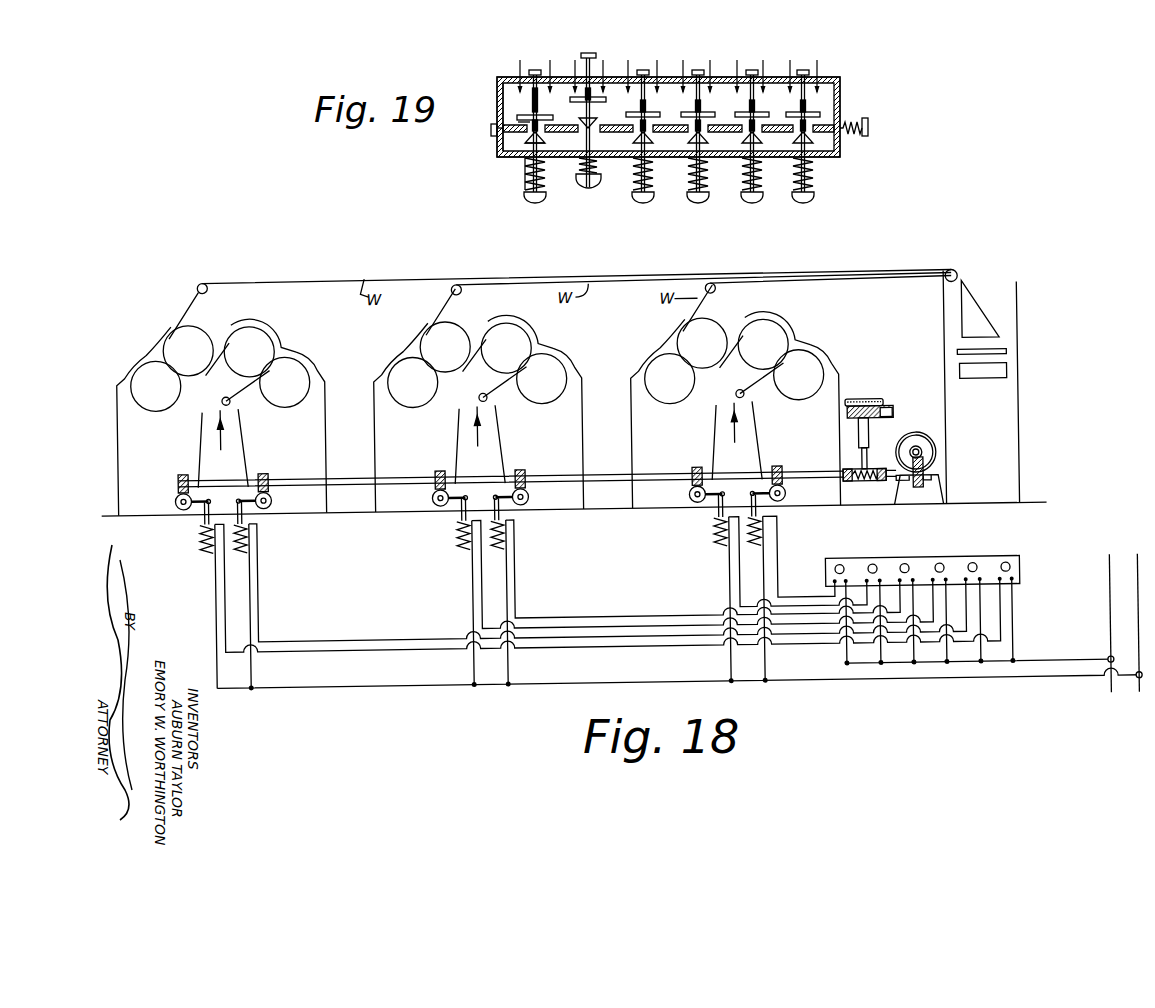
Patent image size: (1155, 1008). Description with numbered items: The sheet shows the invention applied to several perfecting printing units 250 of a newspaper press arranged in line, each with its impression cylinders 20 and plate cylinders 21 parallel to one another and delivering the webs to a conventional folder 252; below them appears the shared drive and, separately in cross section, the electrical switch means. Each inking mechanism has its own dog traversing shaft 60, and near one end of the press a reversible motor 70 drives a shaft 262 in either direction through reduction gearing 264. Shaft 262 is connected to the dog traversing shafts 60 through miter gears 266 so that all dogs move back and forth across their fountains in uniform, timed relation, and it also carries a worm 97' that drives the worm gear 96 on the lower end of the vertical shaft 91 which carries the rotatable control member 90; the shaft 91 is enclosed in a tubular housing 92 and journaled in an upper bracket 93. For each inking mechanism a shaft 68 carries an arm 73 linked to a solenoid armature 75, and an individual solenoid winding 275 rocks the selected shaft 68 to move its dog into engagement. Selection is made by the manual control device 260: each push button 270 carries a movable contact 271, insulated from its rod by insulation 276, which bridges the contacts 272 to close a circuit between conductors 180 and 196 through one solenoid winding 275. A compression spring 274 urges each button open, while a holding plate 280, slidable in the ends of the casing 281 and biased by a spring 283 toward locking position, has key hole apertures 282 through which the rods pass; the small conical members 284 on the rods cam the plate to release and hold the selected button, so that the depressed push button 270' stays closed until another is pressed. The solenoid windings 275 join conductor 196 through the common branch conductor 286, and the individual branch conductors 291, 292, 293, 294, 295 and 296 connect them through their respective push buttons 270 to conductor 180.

In FIG. 18, the impression cylinder 20 is at (713, 329).
In FIG. 18, the plate cylinder 21 is at (672, 389).
In FIG. 18, the dog traversing shaft 60 is at (692, 505).
In FIG. 18, the shaft 68 is at (712, 508).
In FIG. 18, the reversible motor 70 is at (917, 437).
In FIG. 18, the arm 73 is at (748, 487).
In FIG. 18, the solenoid armature 75 is at (728, 517).
In FIG. 18, the rotatable control member 90 is at (870, 402).
In FIG. 18, the vertical shaft 91 is at (862, 464).
In FIG. 18, the tubular housing 92 is at (868, 441).
In FIG. 18, the upper bracket 93 is at (893, 418).
In FIG. 18, the worm gear 96 is at (852, 487).
In FIG. 18, the worm 97' is at (882, 493).
In FIG. 18, the conductor 180 is at (1107, 609).
In FIG. 18, the conductor 196 is at (1135, 621).
In FIG. 18, the printing unit 250 is at (809, 343).
In FIG. 18, the folder 252 is at (994, 322).
In FIG. 19, the manual control device 260 is at (846, 71).
In FIG. 18, the manual control device 260 is at (1018, 574).
In FIG. 18, the shaft 262 is at (605, 474).
In FIG. 18, the reduction gearing 264 is at (925, 464).
In FIG. 18, the miter gears 266 is at (695, 469).
In FIG. 19, the push button 270 is at (651, 150).
In FIG. 18, the push button 270 is at (922, 549).
In FIG. 19, the push button 270' is at (543, 115).
In FIG. 19, the movable contact 271 is at (525, 111).
In FIG. 19, the contacts 272 is at (556, 92).
In FIG. 19, the compression spring 274 is at (528, 178).
In FIG. 18, the solenoid winding 275 is at (761, 533).
In FIG. 19, the insulation 276 is at (540, 112).
In FIG. 19, the holding plate 280 is at (677, 133).
In FIG. 19, the casing 281 is at (838, 100).
In FIG. 19, the key hole apertures 282 is at (543, 136).
In FIG. 19, the spring 283 is at (856, 135).
In FIG. 19, the conical member 284 is at (512, 142).
In FIG. 18, the common branch conductor 286 is at (616, 683).
In FIG. 18, the branch conductor 291 is at (224, 586).
In FIG. 18, the branch conductor 292 is at (257, 601).
In FIG. 18, the branch conductor 293 is at (479, 579).
In FIG. 18, the branch conductor 294 is at (513, 581).
In FIG. 18, the branch conductor 295 is at (738, 585).
In FIG. 18, the branch conductor 296 is at (775, 574).